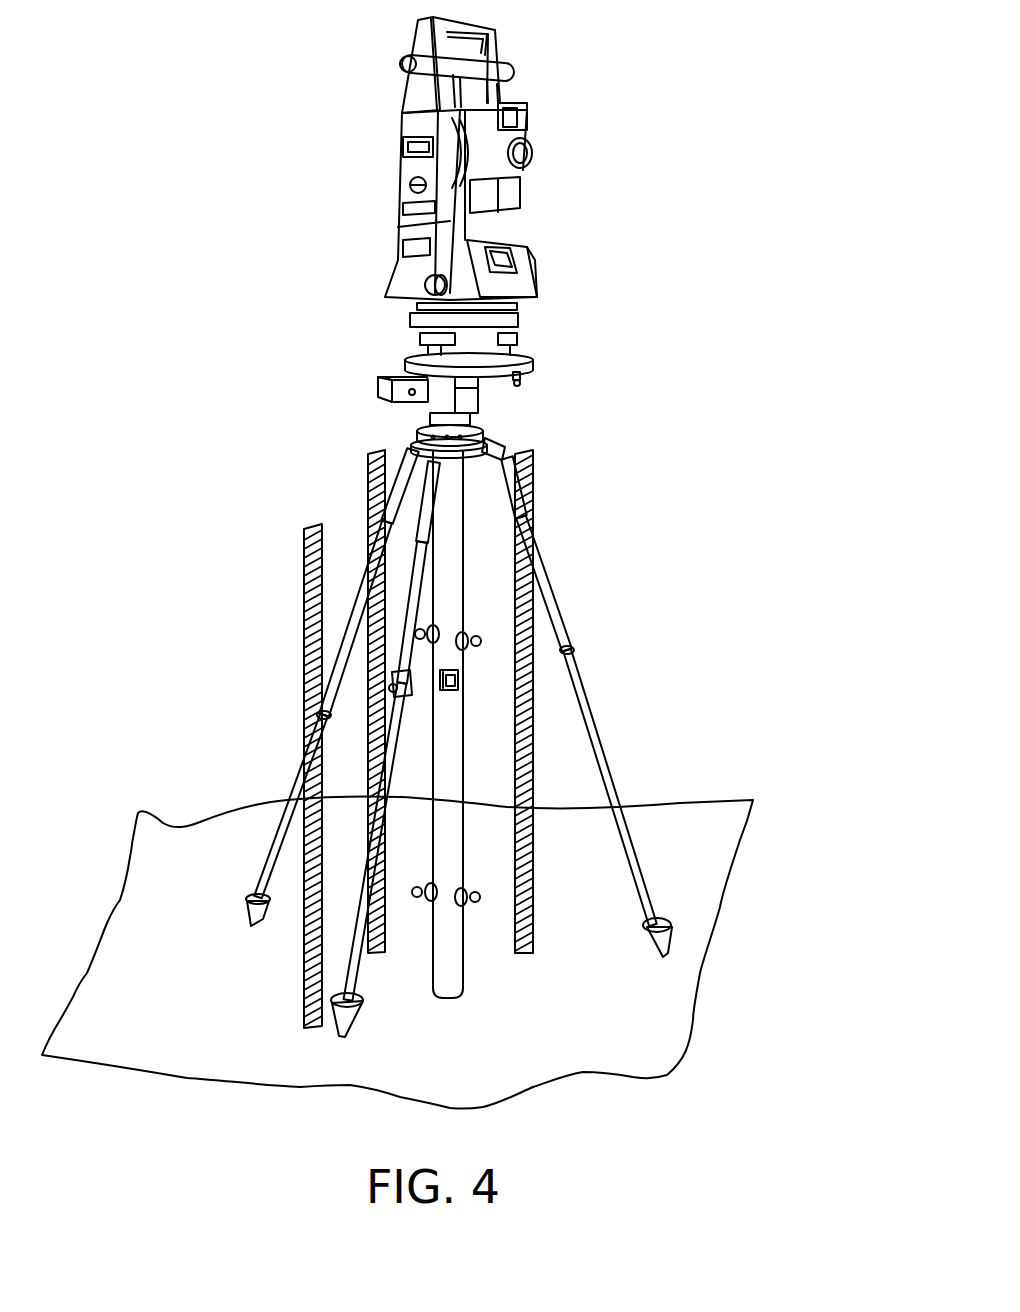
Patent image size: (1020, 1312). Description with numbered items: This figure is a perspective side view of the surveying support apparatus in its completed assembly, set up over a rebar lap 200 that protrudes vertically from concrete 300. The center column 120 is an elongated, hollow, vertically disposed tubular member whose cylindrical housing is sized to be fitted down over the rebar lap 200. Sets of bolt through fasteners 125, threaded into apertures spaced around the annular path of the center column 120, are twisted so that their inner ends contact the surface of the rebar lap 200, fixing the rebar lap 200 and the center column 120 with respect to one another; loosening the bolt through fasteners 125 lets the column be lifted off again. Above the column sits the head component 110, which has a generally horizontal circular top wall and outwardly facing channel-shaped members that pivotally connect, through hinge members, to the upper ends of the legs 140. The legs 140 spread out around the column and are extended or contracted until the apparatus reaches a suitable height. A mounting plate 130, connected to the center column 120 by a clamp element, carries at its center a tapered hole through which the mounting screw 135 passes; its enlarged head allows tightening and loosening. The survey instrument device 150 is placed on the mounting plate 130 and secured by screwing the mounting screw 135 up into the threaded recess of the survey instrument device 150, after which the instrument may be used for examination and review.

The survey instrument device 150 is at (335, 275).
The mounting plate 130 is at (366, 370).
The mounting screw 135 is at (505, 396).
The head component 110 is at (500, 438).
The legs 140 is at (625, 644).
The center column 120 is at (488, 785).
The bolt through fasteners 125 is at (497, 889).
The rebar lap 200 is at (277, 645).
The concrete 300 is at (215, 945).